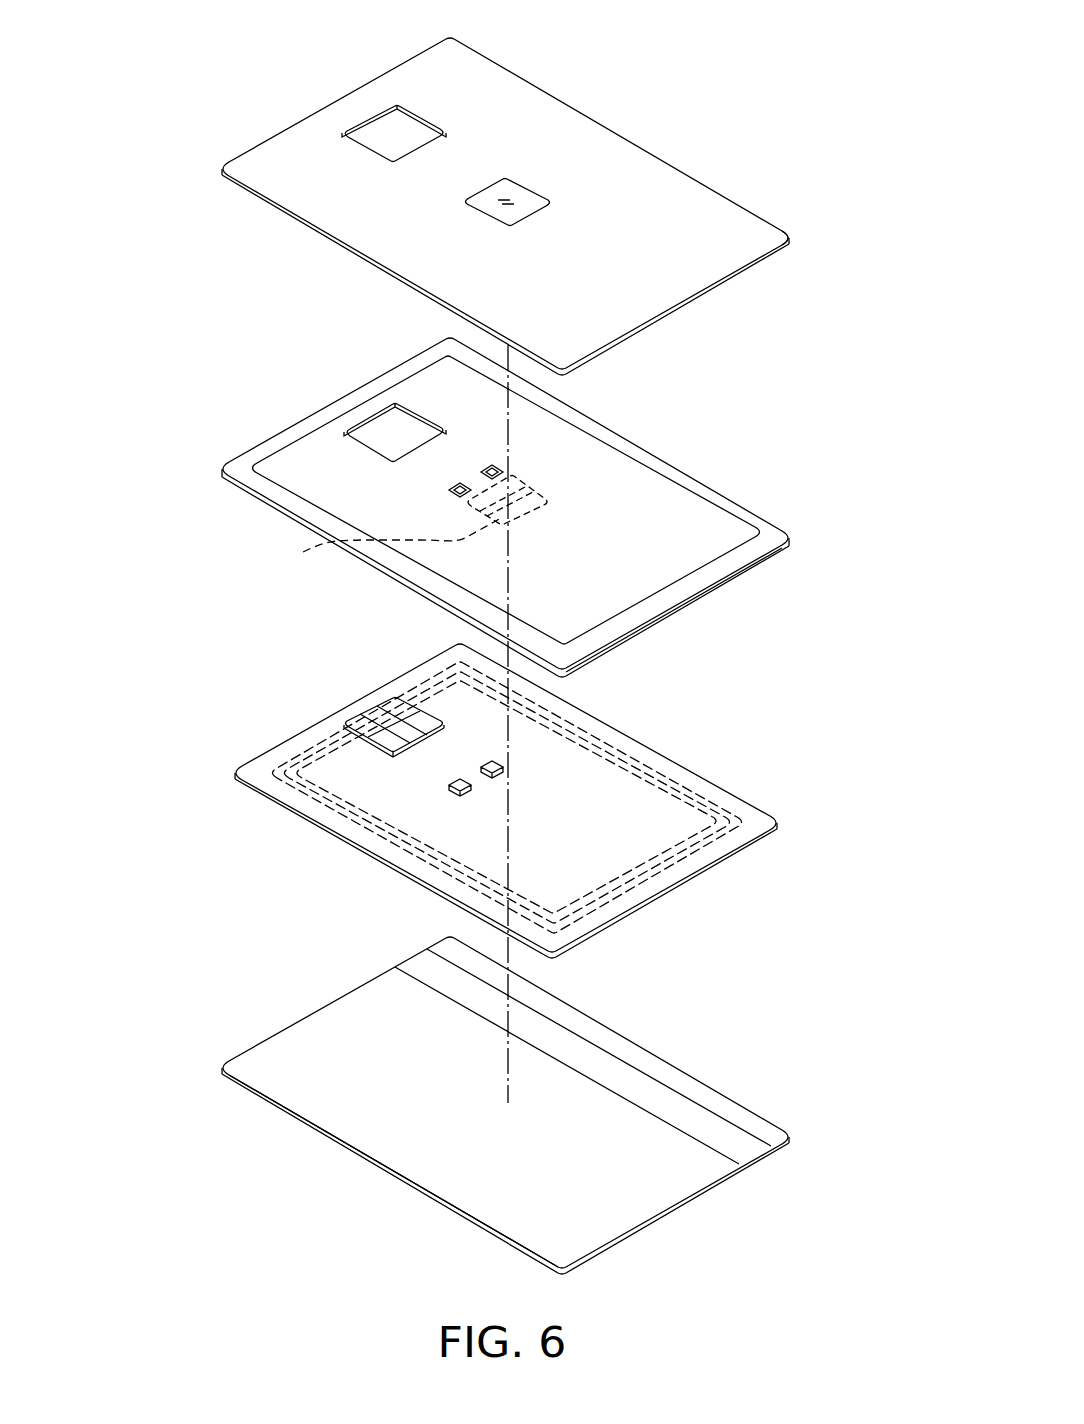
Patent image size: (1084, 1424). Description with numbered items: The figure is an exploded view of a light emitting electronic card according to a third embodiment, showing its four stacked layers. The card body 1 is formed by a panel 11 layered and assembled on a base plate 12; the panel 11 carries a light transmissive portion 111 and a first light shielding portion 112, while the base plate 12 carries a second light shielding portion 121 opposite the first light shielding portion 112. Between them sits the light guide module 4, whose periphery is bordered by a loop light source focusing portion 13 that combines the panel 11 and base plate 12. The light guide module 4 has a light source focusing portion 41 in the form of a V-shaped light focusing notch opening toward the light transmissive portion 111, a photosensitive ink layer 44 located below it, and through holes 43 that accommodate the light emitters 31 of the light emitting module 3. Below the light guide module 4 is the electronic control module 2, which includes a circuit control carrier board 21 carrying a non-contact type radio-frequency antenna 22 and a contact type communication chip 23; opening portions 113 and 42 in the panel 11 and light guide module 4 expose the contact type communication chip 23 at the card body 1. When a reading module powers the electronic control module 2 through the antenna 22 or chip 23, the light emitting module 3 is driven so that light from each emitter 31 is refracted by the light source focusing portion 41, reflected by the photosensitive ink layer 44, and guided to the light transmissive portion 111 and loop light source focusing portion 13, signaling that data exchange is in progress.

The card body 1 is at (270, 112).
The panel 11 is at (628, 137).
The light transmissive portion 111 is at (517, 193).
The first light shielding portion 112 is at (773, 233).
The opening portion 113 is at (393, 136).
The base plate 12 is at (763, 1120).
The second light shielding portion 121 is at (462, 1215).
The loop light source focusing portion 13 is at (750, 560).
The electronic control module 2 is at (222, 760).
The circuit control carrier board 21 is at (780, 830).
The non-contact type radio-frequency antenna 22 is at (663, 862).
The contact type communication chip 23 is at (373, 715).
The light emitting module 3 is at (536, 744).
The light emitter 31 is at (490, 759).
The light guide module 4 is at (702, 517).
The light source focusing portion 41 is at (530, 491).
The opening portion 42 is at (383, 430).
The through hole 43 is at (449, 490).
The photosensitive ink layer 44 is at (388, 542).